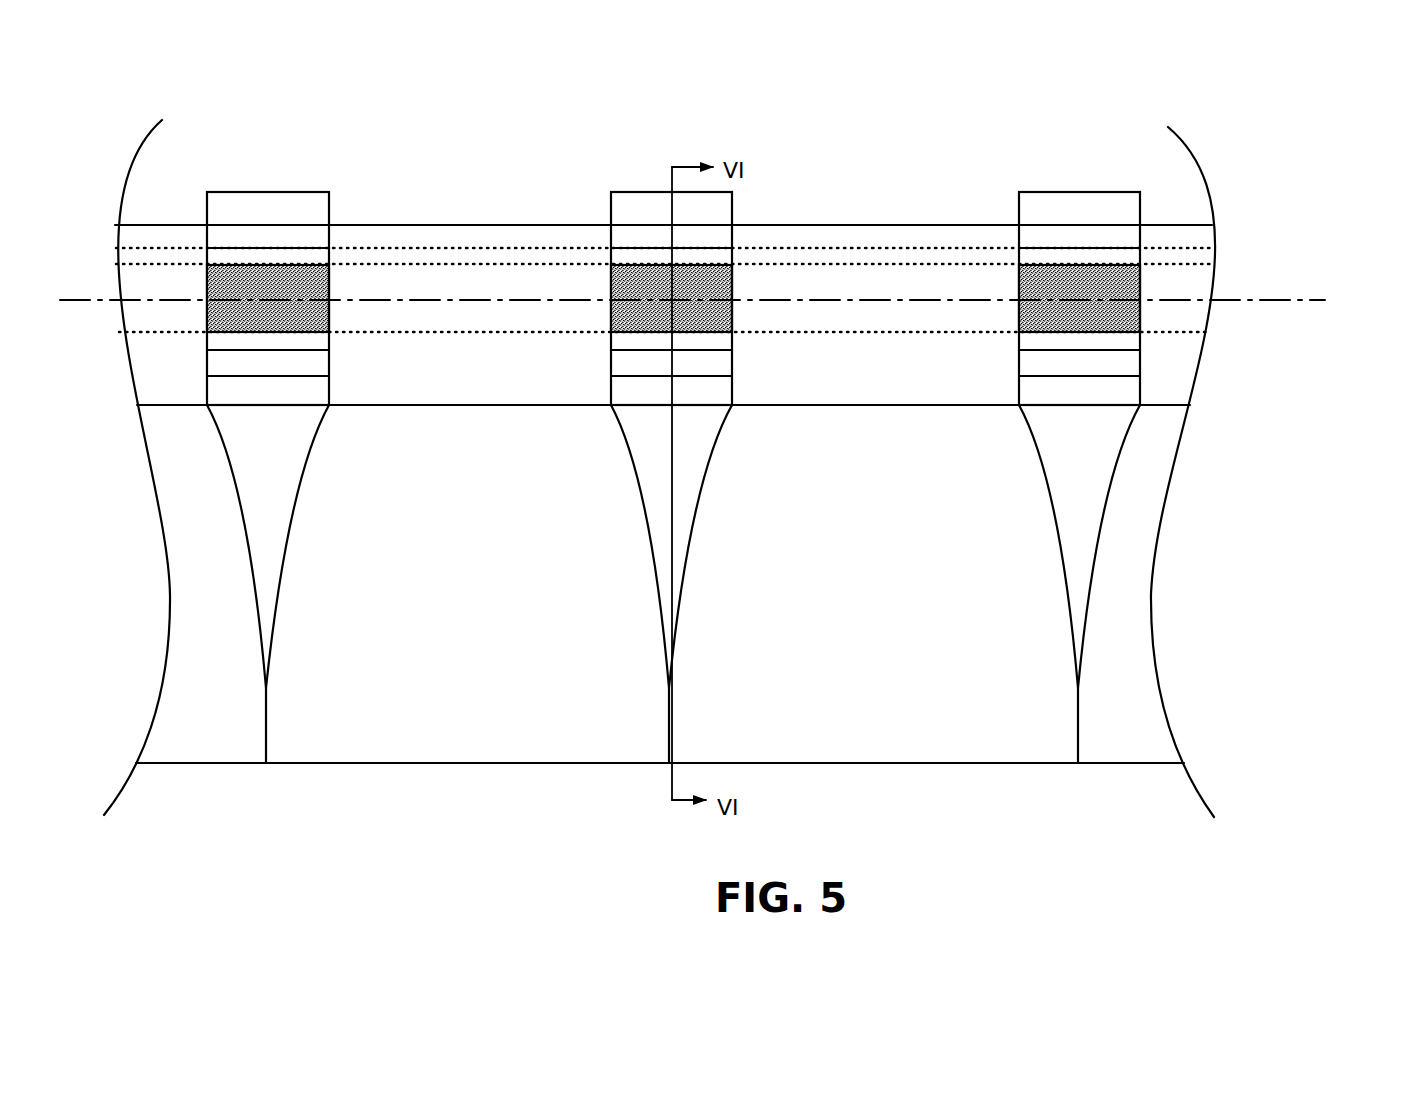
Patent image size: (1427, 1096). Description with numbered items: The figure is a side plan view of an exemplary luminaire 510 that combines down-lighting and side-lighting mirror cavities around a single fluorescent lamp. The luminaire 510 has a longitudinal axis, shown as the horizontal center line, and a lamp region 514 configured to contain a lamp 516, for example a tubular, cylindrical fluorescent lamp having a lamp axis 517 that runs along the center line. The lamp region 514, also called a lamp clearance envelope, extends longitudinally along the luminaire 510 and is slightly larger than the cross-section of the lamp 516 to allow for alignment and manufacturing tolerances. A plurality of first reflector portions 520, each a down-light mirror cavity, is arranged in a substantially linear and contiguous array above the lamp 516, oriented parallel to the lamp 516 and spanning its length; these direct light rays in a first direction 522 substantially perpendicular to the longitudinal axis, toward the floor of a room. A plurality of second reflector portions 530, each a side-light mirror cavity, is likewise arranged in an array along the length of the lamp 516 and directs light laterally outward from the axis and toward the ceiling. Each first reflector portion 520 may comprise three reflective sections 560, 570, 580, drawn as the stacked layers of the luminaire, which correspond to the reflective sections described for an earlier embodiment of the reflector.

The luminaire 510 is at (1250, 108).
The lamp region 514 is at (1173, 252).
The lamp 516 is at (1214, 282).
The lamp axis 517 is at (735, 291).
The first reflector portion 520 is at (470, 212).
The first direction 522 is at (1298, 842).
The second reflector portion 530 is at (279, 166).
The reflective section 560 is at (497, 329).
The reflective section 570 is at (497, 389).
The reflective section 580 is at (497, 586).